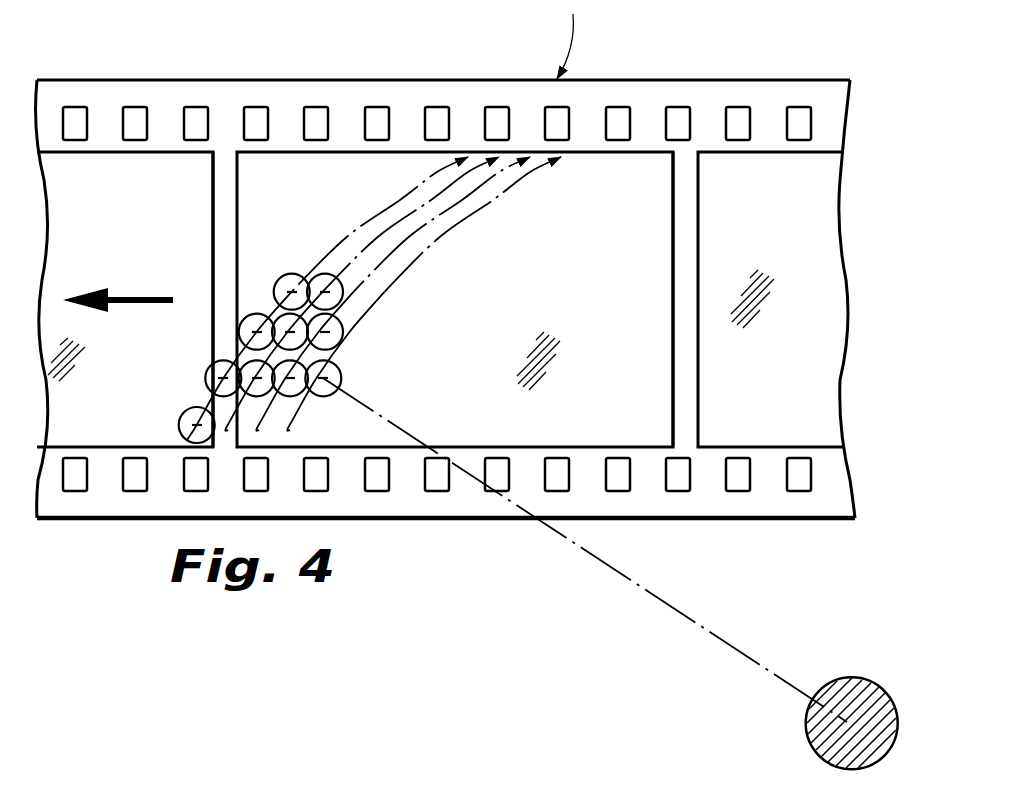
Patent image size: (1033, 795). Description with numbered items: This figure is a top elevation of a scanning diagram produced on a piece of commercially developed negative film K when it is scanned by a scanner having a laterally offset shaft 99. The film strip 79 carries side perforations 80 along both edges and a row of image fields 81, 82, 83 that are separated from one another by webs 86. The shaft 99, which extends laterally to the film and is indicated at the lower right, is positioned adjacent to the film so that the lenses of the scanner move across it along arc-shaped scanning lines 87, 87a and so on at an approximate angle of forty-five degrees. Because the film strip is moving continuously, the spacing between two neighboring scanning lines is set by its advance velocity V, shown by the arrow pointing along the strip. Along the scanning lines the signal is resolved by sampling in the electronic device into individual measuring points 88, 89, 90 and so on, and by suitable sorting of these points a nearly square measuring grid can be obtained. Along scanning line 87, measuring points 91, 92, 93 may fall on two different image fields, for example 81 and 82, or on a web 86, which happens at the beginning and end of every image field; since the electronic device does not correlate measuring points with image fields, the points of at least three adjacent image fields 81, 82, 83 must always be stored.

The film strip 79 is at (274, 87).
The side perforations 80 is at (132, 118).
The image field 81 is at (112, 423).
The image field 82 is at (391, 433).
The image field 83 is at (725, 422).
The web 86 is at (216, 197).
The scanning line 87 is at (343, 236).
The scanning line 87a is at (401, 220).
The measuring point 88 is at (262, 393).
The measuring point 89 is at (337, 355).
The measuring point 90 is at (340, 294).
The measuring point 91 is at (183, 413).
The measuring point 92 is at (210, 368).
The measuring point 93 is at (243, 322).
The shaft 99 is at (851, 682).
The film K is at (505, 395).
The advance velocity V is at (127, 297).